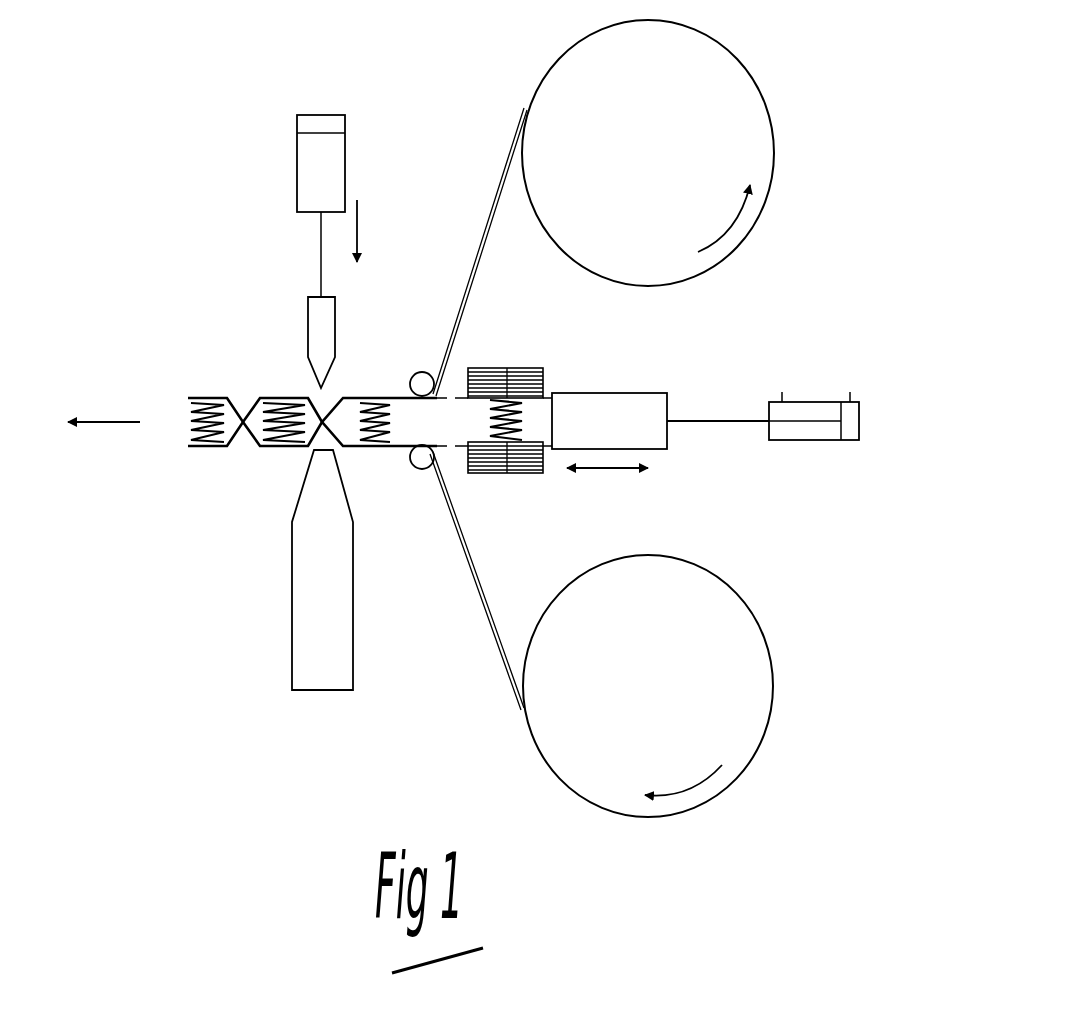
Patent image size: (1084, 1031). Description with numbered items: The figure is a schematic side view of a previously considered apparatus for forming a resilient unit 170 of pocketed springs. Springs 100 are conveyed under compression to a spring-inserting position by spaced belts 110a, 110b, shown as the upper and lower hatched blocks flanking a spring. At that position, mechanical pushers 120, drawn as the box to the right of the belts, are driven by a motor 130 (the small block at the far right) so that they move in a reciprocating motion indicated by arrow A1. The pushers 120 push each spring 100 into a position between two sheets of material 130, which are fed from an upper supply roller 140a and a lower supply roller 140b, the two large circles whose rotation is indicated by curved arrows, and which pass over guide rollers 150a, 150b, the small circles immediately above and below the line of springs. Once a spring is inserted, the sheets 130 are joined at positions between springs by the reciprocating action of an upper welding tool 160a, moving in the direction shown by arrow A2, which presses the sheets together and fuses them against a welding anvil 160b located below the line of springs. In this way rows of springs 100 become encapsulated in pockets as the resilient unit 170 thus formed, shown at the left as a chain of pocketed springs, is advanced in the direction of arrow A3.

The springs 100 is at (278, 404).
The upper spaced belt 110a is at (597, 338).
The lower spaced belt 110b is at (602, 523).
The mechanical pushers 120 is at (637, 405).
The sheets of material 130 is at (500, 190).
The upper supply roller 140a is at (775, 153).
The lower supply roller 140b is at (740, 645).
The upper guide roller 150a is at (415, 377).
The lower guide roller 150b is at (418, 468).
The upper welding tool 160a is at (323, 312).
The welding anvil 160b is at (302, 615).
The resilient unit 170 is at (181, 392).
The arrow A1 is at (613, 472).
The arrow A2 is at (386, 222).
The arrow A3 is at (107, 420).